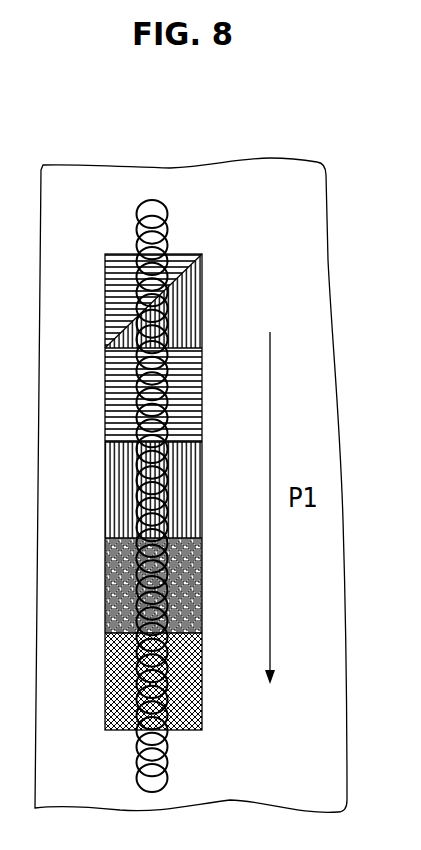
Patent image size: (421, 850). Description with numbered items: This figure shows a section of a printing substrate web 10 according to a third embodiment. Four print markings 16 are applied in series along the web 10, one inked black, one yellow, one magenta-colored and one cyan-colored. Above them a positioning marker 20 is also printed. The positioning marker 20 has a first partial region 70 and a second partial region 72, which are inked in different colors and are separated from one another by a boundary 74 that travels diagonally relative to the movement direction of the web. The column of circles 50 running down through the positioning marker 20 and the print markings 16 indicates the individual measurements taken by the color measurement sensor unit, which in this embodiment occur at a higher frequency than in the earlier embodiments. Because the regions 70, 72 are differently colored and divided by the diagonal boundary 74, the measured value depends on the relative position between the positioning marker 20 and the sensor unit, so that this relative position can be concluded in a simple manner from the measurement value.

The printing substrate web 10 is at (282, 172).
The positioning marker 20 is at (155, 456).
The circles 50 is at (150, 200).
The second partial region 72 is at (117, 263).
The boundary 74 is at (138, 326).
The first partial region 70 is at (190, 300).
The print markings 16 is at (112, 393).